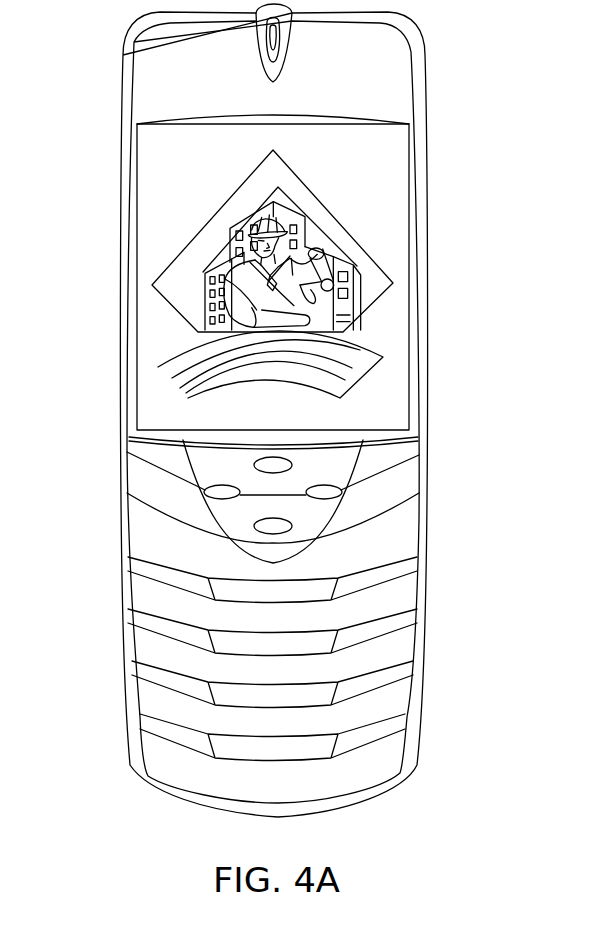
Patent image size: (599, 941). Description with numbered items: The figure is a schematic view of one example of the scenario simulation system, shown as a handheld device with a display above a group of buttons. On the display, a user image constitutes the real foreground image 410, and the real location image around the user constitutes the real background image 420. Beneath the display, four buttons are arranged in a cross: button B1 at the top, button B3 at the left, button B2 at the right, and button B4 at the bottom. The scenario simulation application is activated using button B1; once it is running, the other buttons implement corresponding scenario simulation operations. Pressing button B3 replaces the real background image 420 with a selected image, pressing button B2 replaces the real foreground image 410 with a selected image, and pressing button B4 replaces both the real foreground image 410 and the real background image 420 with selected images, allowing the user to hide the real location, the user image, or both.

The real background image 420 is at (307, 186).
The real foreground image 410 is at (305, 276).
The button B1 is at (292, 464).
The button B2 is at (342, 490).
The button B3 is at (204, 491).
The button B4 is at (292, 526).